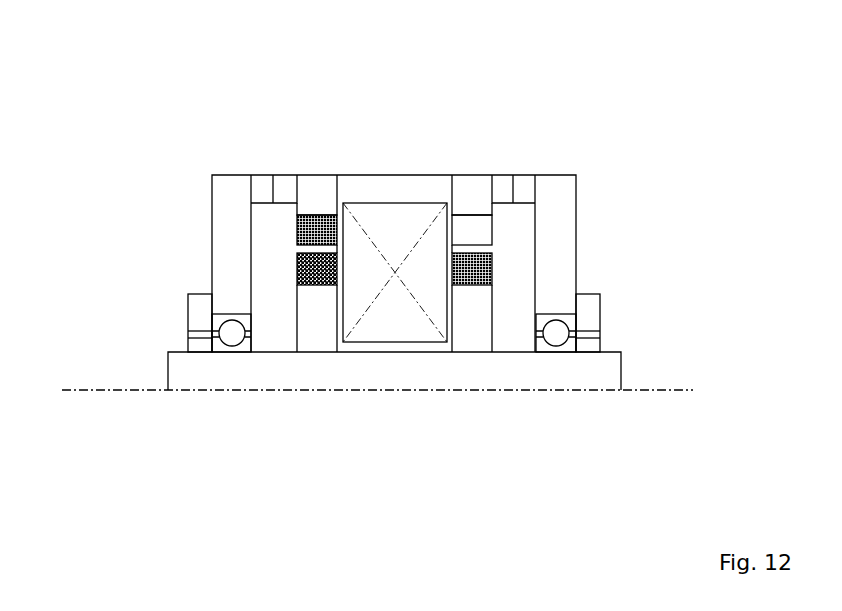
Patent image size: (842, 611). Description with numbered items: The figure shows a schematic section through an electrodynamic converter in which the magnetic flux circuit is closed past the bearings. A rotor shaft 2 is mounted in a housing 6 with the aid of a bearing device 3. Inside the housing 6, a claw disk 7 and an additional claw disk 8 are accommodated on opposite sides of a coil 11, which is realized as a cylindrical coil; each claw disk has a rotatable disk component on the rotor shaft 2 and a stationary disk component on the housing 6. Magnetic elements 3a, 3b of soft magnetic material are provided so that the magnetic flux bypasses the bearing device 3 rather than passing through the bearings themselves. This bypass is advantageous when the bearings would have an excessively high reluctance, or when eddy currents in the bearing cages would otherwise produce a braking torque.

The rotor shaft 2 is at (603, 378).
The bearing device 3 is at (229, 333).
The magnetic element 3a is at (588, 313).
The magnetic element 3b is at (200, 315).
The housing 6 is at (558, 192).
The claw disk 7 is at (317, 193).
The additional claw disk 8 is at (470, 193).
The coil 11 is at (392, 310).